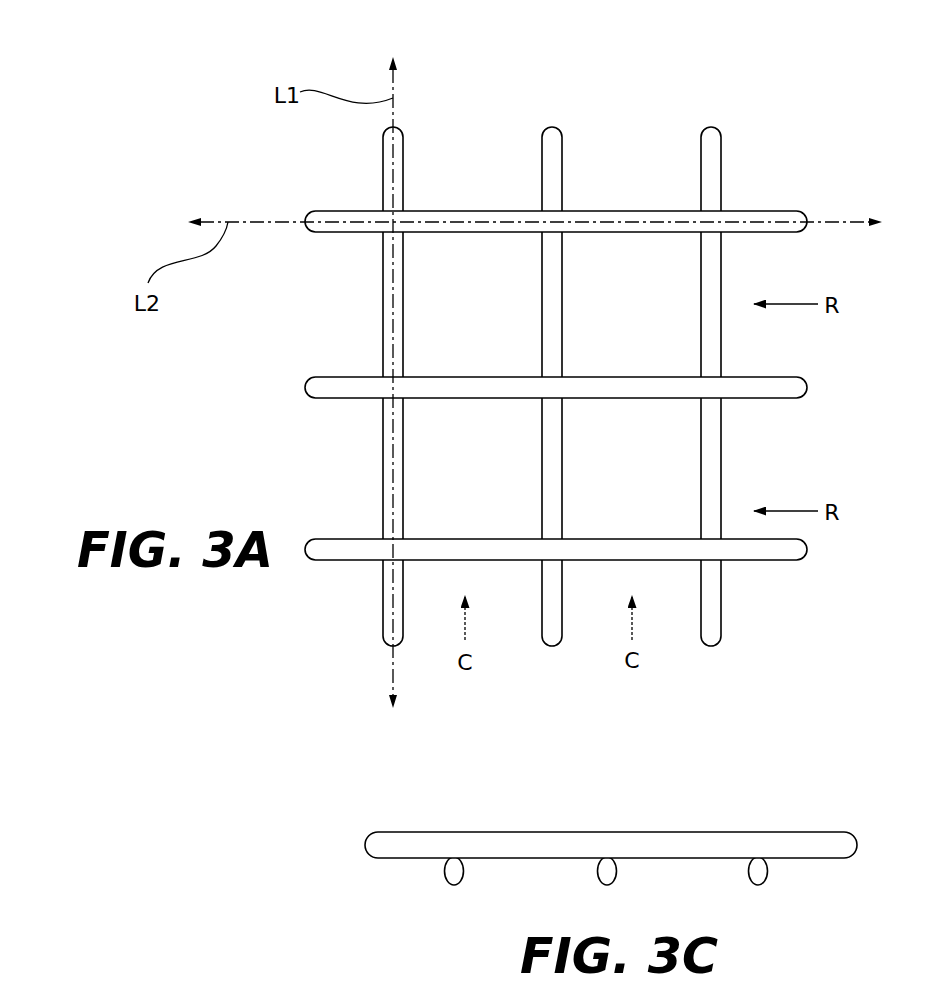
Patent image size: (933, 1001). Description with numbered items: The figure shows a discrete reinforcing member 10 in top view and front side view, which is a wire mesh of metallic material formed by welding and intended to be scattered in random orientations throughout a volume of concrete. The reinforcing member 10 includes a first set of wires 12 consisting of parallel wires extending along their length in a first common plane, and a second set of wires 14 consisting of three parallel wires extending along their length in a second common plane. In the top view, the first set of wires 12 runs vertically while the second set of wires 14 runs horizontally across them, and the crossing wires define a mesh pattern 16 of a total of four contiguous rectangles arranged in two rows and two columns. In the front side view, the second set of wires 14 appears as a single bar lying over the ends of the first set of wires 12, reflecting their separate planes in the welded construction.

In FIG. 3A, the reinforcing member 10 is at (483, 382).
In FIG. 3A, the first set of wires 12 is at (424, 139).
In FIG. 3C, the first set of wires 12 is at (445, 878).
In FIG. 3A, the second set of wires 14 is at (309, 259).
In FIG. 3C, the second set of wires 14 is at (672, 832).
In FIG. 3A, the mesh pattern 16 is at (425, 306).